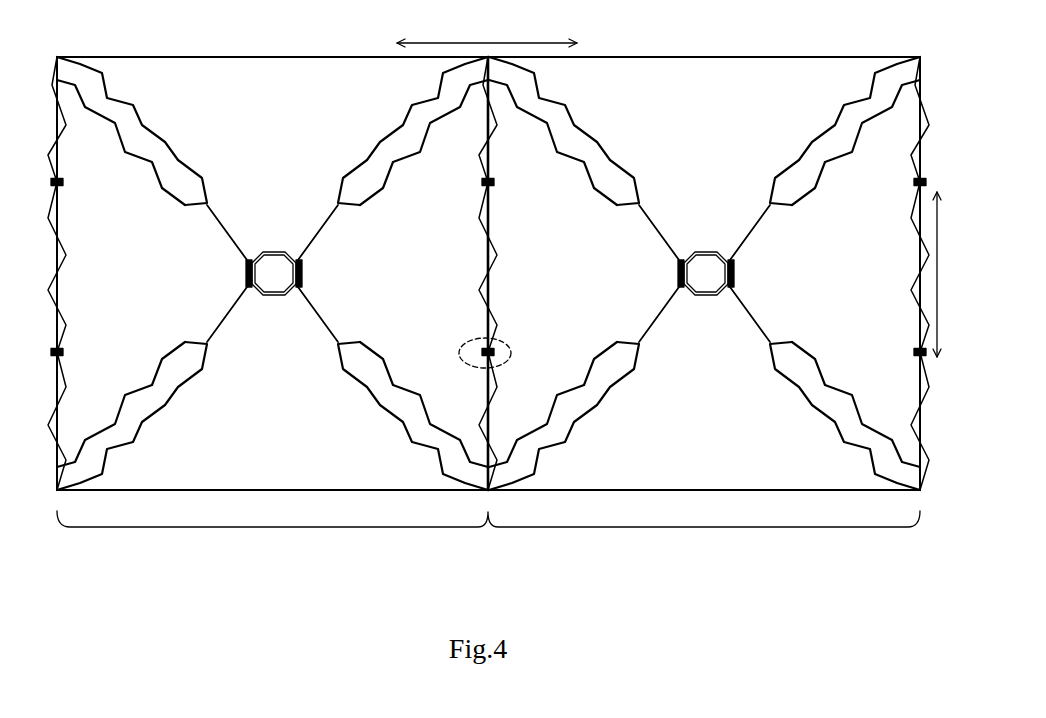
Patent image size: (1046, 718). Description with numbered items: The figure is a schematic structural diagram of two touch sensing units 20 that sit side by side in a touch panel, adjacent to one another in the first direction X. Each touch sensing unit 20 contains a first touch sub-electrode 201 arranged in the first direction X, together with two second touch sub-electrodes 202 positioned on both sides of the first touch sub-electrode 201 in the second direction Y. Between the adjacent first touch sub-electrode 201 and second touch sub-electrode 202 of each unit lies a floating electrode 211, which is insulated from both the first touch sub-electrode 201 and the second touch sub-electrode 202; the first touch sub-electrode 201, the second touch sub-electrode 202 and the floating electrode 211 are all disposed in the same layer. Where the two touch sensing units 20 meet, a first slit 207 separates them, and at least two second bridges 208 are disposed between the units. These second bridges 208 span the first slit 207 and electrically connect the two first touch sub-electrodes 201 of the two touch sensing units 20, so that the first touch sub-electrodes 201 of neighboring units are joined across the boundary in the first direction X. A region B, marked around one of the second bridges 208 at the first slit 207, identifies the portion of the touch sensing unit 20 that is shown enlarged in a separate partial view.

The touch sensing unit 20 is at (488, 544).
The first touch sub-electrode 201 is at (490, 275).
The second touch sub-electrode 202 is at (491, 275).
The first slit 207 is at (485, 232).
The second bridge 208 is at (480, 353).
The floating electrode 211 is at (543, 113).
The region B is at (503, 360).
The first direction X is at (487, 30).
The second direction Y is at (946, 274).